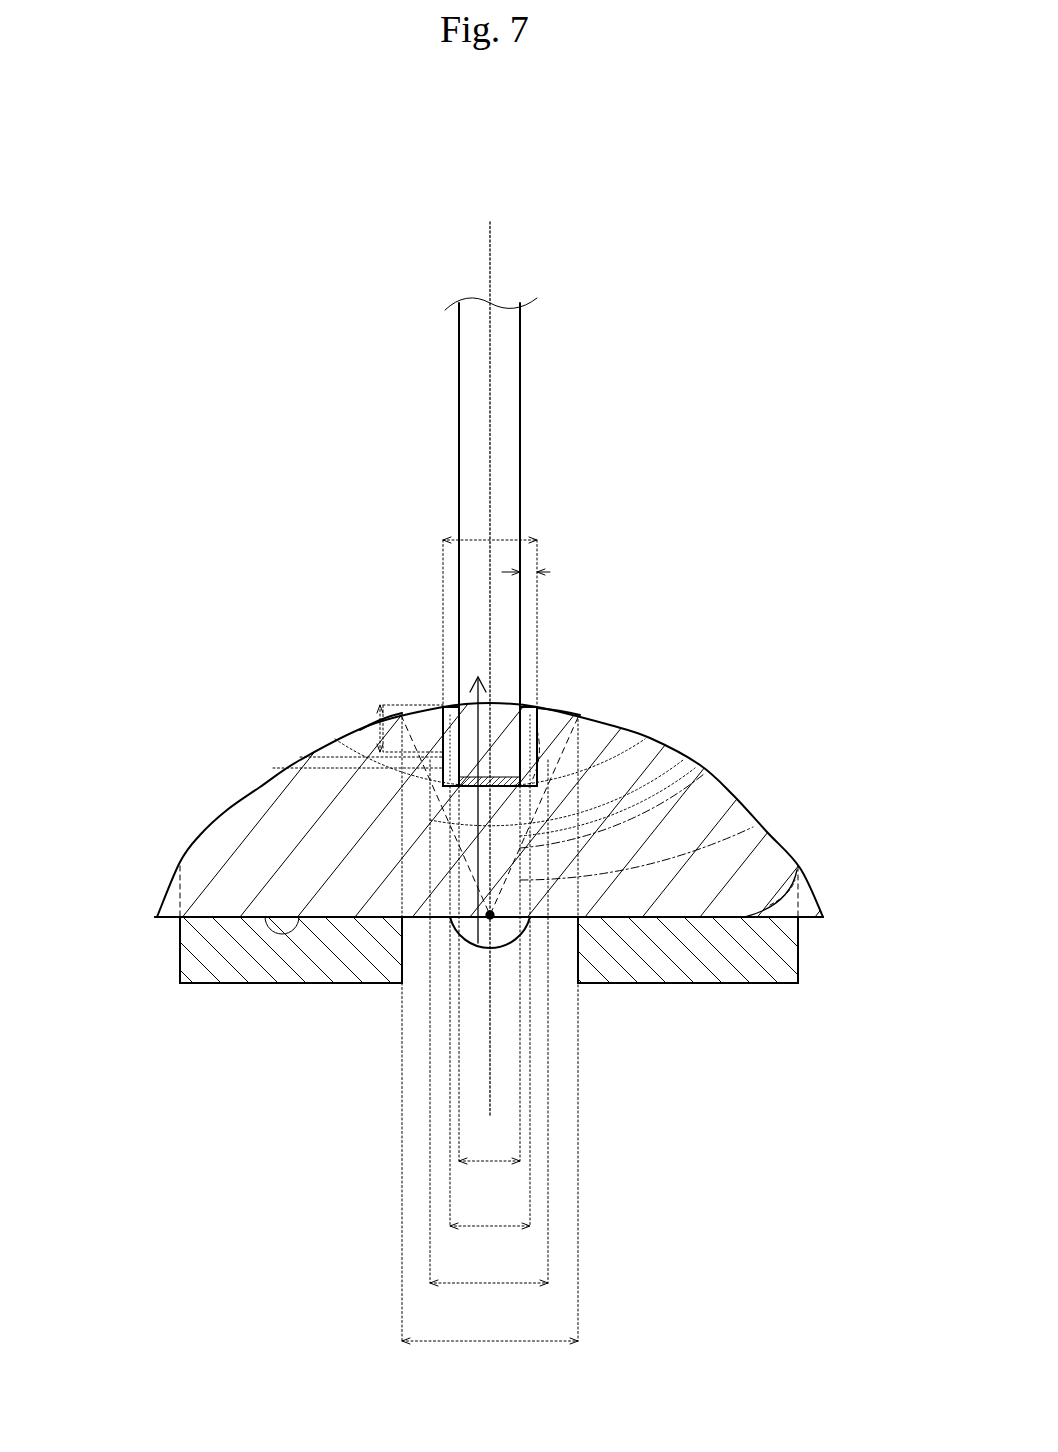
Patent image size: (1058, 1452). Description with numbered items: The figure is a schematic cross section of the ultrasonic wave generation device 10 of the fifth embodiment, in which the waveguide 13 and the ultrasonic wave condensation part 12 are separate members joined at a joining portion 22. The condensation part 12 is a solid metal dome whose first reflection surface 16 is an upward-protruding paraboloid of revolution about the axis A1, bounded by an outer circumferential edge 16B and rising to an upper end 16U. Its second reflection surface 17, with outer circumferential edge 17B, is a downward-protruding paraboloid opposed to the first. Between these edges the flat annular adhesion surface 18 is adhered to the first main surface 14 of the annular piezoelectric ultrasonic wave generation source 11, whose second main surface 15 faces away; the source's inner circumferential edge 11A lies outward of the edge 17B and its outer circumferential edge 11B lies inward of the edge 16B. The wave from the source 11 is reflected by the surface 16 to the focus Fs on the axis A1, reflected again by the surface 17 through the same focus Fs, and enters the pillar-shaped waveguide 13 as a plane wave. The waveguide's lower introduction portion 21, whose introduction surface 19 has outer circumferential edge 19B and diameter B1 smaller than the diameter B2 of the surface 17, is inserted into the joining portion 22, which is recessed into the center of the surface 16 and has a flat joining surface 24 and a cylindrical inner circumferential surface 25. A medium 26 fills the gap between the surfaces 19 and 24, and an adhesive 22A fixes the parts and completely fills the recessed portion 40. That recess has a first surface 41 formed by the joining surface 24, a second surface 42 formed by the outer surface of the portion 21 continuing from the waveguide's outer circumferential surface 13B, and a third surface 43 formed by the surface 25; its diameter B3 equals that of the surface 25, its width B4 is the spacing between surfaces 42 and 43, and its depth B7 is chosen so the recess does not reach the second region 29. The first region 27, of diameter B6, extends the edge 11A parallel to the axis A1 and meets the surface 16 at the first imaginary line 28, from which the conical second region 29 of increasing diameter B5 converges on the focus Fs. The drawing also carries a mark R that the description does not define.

The ultrasonic wave generation device 10 is at (258, 456).
The axis A1 is at (492, 256).
The ultrasonic wave generation source 11 is at (265, 985).
The inner circumferential edge 11A is at (404, 952).
The outer circumferential edge 11B is at (178, 920).
The ultrasonic wave condensation part 12 is at (690, 790).
The waveguide 13 is at (510, 400).
The outer circumferential surface 13B is at (521, 452).
The first main surface 14 is at (797, 878).
The second main surface 15 is at (668, 985).
The first reflection surface 16 is at (336, 740).
The upper end 16U is at (400, 712).
The outer circumferential edge 16B is at (160, 918).
The second reflection surface 17 is at (500, 950).
The outer circumferential edge 17B is at (527, 935).
The adhesion surface 18 is at (268, 922).
The introduction surface 19 is at (655, 790).
The outer circumferential edge 19B is at (646, 745).
The introduction portion 21 is at (503, 737).
The joining portion 22 is at (450, 700).
The adhesive 22A is at (383, 745).
The joining surface 24 is at (520, 643).
The inner circumferential surface 25 is at (453, 697).
The medium 26 is at (640, 830).
The first region 27 is at (690, 797).
The first imaginary line 28 is at (527, 730).
The second region 29 is at (753, 828).
The recessed portion 40 is at (443, 700).
The first surface 41 is at (273, 767).
The second surface 42 is at (537, 708).
The third surface 43 is at (553, 710).
The radius of fillet R is at (800, 946).
The focus Fs is at (488, 918).
The diameter dimension B1 is at (470, 1163).
The diameter dimension B2 is at (480, 1228).
The diameter dimension B3 is at (505, 538).
The width dimension B4 is at (538, 570).
The diameter dimension B5 is at (485, 1285).
The diameter dimension B6 is at (515, 1343).
The depth dimension B7 is at (383, 730).